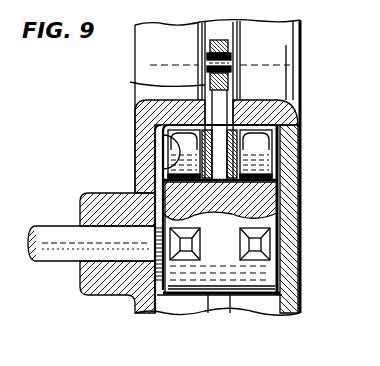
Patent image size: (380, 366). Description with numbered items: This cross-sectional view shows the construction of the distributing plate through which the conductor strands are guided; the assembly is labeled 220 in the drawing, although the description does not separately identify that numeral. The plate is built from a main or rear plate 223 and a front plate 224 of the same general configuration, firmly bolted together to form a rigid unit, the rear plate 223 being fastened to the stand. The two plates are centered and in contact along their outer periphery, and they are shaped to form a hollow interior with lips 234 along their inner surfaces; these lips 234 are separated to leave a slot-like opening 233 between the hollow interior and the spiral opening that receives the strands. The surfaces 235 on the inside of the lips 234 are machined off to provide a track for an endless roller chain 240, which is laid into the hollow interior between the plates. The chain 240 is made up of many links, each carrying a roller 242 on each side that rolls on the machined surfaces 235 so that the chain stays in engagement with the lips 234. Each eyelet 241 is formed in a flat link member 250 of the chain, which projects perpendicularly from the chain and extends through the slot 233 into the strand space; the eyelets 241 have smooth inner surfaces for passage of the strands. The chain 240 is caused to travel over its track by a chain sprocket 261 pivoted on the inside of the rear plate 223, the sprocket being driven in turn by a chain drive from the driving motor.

The housing 220 is at (132, 39).
The rear plate 223 is at (138, 298).
The front plate 224 is at (287, 298).
The slot-like opening 233 is at (130, 82).
The lips 234 is at (137, 115).
The machined surfaces 235 is at (156, 128).
The endless roller chain 240 is at (245, 140).
The eyelets 241 is at (235, 53).
The rollers 242 is at (166, 180).
The flat link member 250 is at (218, 95).
The chain sprocket 261 is at (258, 266).